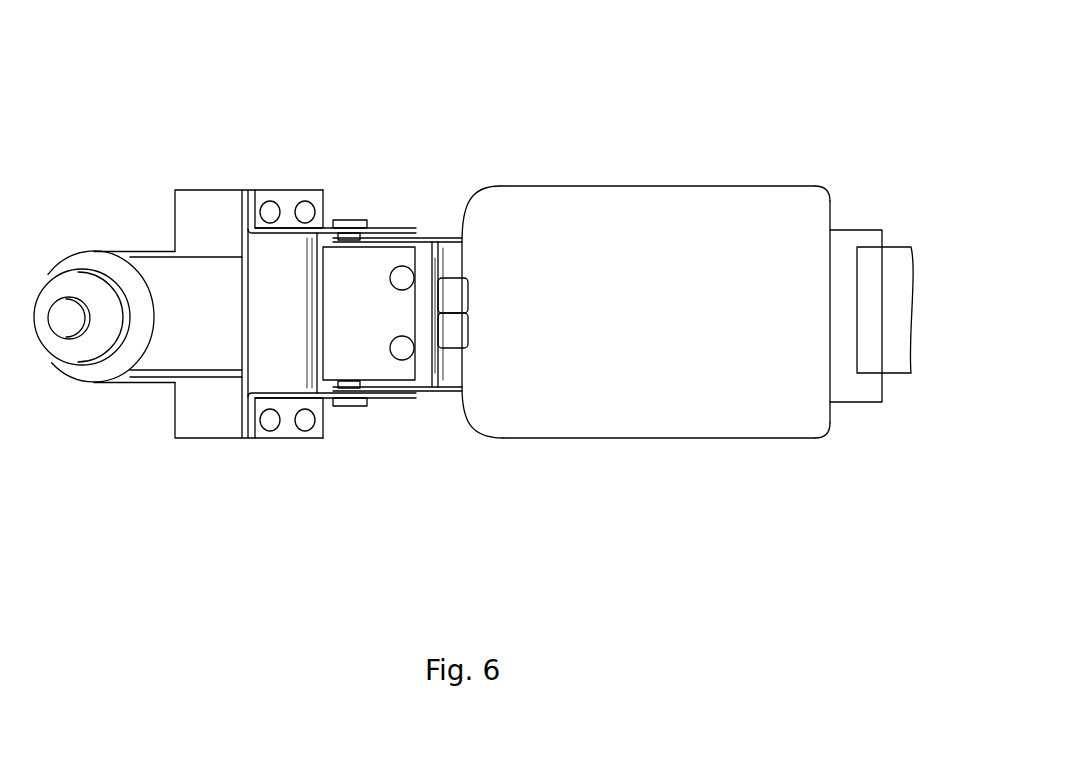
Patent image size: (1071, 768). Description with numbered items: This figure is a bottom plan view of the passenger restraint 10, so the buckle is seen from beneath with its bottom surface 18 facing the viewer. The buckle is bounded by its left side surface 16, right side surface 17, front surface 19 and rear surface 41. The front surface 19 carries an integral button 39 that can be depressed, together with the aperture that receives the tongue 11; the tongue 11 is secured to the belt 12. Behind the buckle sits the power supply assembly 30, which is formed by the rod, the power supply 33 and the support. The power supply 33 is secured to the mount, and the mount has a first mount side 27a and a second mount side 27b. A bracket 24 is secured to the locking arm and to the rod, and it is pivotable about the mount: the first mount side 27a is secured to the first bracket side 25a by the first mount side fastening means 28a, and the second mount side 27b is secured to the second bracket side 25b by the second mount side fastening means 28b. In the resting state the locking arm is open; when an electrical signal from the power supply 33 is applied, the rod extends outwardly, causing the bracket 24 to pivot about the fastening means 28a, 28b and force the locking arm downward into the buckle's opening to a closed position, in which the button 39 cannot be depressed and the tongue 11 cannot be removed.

The passenger restraint 10 is at (145, 73).
The tongue 11 is at (858, 392).
The belt 12 is at (898, 320).
The left side surface 16 is at (656, 239).
The right side surface 17 is at (740, 438).
The bottom surface 18 is at (687, 339).
The front surface 19 is at (830, 415).
The bracket 24 is at (587, 183).
The first bracket side 25a is at (438, 242).
The second bracket side 25b is at (442, 388).
The first mount side 27a is at (288, 225).
The second mount side 27b is at (292, 400).
The first mount side fastening means 28a is at (355, 222).
The second mount side fastening means 28b is at (351, 407).
The power supply assembly 30 is at (98, 230).
The power supply 33 is at (160, 357).
The button 39 is at (812, 286).
The rear surface 41 is at (463, 400).